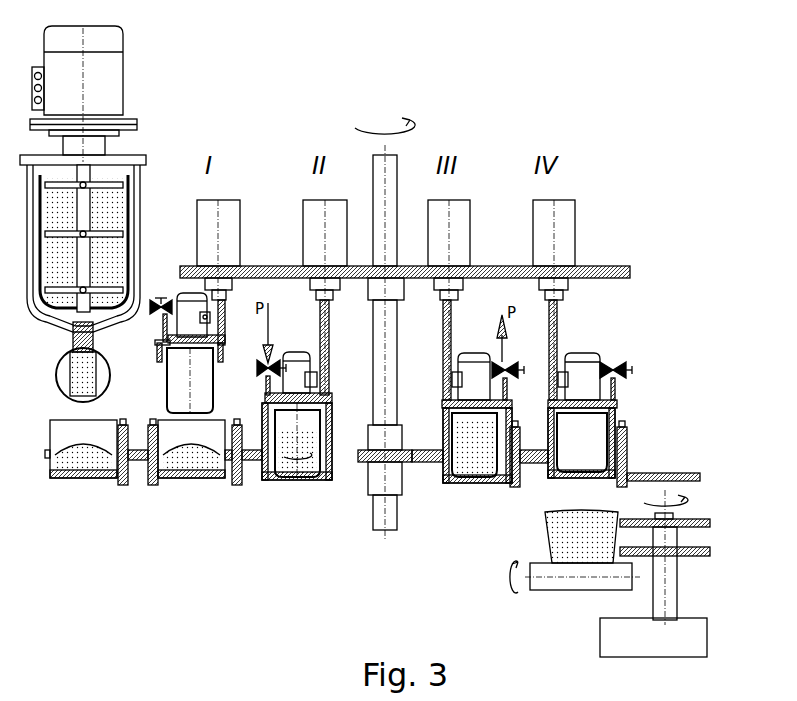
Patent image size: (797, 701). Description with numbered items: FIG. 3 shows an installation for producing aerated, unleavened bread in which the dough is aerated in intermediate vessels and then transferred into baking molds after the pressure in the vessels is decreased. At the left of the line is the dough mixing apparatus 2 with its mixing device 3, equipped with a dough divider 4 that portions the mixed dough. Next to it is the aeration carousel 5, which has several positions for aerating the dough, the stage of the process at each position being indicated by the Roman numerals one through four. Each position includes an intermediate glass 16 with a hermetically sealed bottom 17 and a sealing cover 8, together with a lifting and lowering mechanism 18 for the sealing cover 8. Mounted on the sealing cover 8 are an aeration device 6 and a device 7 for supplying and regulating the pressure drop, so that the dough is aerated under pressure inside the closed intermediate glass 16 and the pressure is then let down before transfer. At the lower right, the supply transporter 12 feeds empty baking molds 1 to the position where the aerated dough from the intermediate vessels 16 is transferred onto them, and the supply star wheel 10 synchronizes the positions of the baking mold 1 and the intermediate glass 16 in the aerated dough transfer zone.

The baking mold 1 is at (548, 556).
The dough mixing apparatus 2 is at (138, 250).
The mixing device 3 is at (147, 160).
The dough divider 4 is at (57, 388).
The aeration carousel 5 is at (602, 263).
The aeration device 6 is at (168, 365).
The device for supplying and regulating pressure drop 7 is at (262, 372).
The sealing cover 8 is at (157, 341).
The supply star wheel 10 is at (712, 520).
The supply transporter 12 is at (536, 590).
The intermediate vessel 16 is at (232, 470).
The hermetically sealed bottom 17 is at (190, 480).
The lifting and lowering mechanism 18 is at (228, 207).